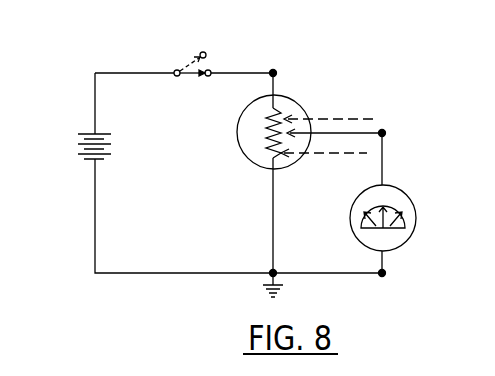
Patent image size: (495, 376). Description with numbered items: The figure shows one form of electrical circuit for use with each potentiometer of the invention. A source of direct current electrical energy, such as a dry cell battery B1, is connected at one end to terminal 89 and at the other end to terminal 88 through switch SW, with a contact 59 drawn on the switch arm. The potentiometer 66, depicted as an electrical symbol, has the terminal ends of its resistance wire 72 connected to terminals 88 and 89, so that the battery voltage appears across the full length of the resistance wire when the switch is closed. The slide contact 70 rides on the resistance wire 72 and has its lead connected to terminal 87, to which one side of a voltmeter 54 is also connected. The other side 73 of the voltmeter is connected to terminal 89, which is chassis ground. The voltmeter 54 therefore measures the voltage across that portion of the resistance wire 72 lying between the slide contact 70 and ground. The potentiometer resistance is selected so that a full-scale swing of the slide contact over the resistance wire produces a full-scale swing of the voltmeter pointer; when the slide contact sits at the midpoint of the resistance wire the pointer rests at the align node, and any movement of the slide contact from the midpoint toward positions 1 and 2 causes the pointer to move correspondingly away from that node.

The switch SW is at (186, 55).
The switch arm 59 is at (192, 82).
The dry cell battery B1 is at (75, 143).
The terminal 88 is at (277, 82).
The potentiometer 66 is at (238, 125).
The resistance wire 72 is at (278, 107).
The slide contact 70 is at (301, 137).
The position 2 is at (339, 120).
The position 1 is at (333, 156).
The terminal 87 is at (384, 163).
The voltmeter 54 is at (400, 204).
The other side of the voltmeter 73 is at (385, 261).
The terminal 89 is at (272, 271).